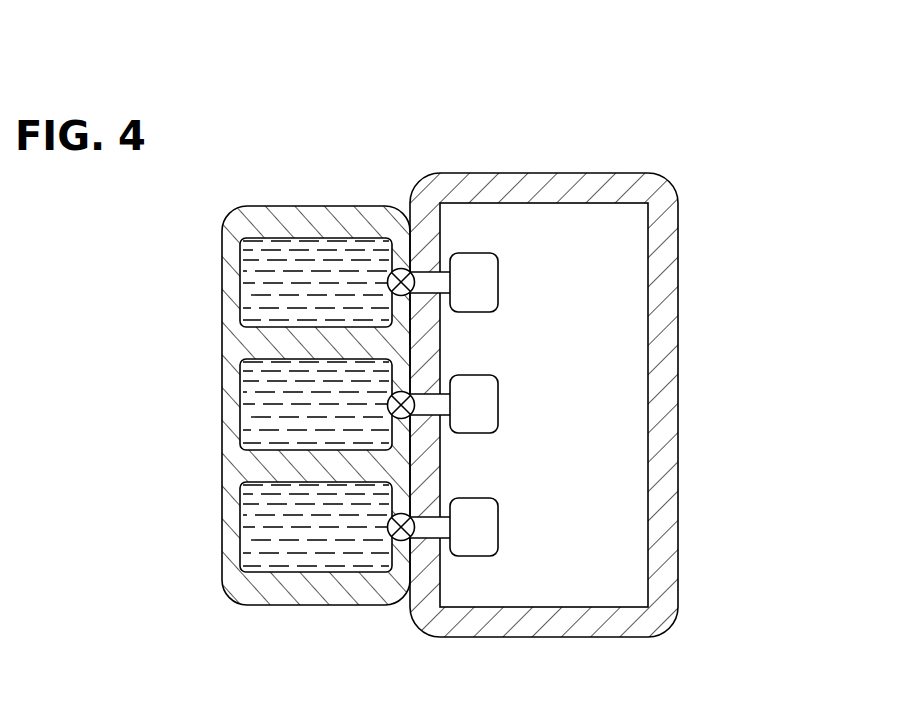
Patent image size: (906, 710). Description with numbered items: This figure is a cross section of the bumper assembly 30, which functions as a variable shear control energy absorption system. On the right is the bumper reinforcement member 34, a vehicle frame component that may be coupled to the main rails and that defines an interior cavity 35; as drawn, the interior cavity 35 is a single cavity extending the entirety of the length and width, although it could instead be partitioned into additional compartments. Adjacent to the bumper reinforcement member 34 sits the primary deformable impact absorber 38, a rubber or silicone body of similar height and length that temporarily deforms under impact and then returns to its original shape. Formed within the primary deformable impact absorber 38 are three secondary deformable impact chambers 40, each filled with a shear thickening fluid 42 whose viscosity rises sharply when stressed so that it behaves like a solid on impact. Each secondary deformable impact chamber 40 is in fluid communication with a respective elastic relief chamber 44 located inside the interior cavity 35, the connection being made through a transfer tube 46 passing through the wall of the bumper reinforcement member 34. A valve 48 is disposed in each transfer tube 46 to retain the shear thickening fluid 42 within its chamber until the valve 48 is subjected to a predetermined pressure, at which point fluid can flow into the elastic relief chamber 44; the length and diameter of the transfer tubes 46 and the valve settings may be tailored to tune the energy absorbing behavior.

The bumper assembly 30 is at (698, 104).
The bumper reinforcement member 34 is at (558, 188).
The interior cavity 35 is at (647, 355).
The primary deformable impact absorber 38 is at (222, 237).
The secondary deformable impact chamber 40 is at (240, 276).
The shear thickening fluid 42 is at (297, 543).
The elastic relief chamber 44 is at (483, 280).
The transfer tube 46 is at (428, 276).
The valve 48 is at (399, 269).